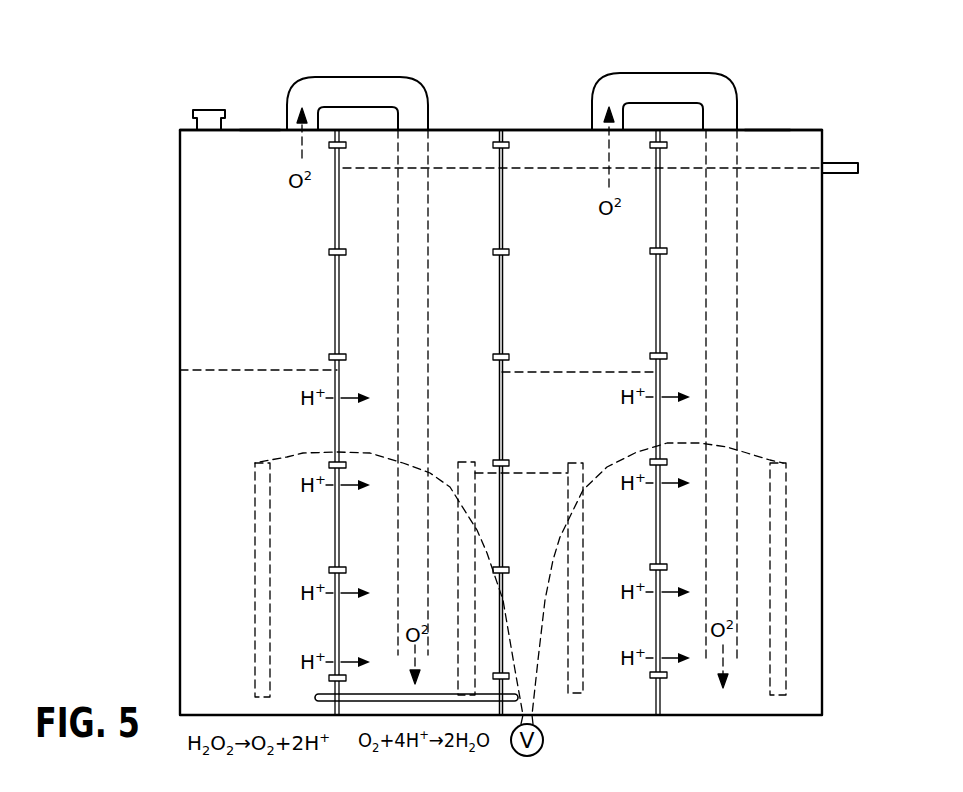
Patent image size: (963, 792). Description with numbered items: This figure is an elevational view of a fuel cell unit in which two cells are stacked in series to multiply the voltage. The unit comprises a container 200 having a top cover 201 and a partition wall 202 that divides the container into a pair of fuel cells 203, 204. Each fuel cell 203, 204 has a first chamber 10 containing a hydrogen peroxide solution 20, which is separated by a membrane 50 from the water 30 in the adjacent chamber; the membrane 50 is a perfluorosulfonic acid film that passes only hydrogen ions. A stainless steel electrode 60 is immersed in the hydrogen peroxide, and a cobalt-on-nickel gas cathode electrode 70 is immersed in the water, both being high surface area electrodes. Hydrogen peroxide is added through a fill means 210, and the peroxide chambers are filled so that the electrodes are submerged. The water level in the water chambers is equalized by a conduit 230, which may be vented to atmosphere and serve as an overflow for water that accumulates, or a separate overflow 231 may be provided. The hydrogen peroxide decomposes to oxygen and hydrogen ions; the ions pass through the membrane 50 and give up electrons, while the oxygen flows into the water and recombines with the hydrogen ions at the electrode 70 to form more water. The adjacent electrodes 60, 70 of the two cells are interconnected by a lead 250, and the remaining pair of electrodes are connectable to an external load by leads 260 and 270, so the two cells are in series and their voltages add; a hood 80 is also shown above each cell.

The first chamber 10 is at (278, 295).
The hydrogen peroxide solution 20 is at (232, 346).
The water 30 is at (579, 342).
The membrane 50 is at (337, 222).
The electrode 60 is at (371, 561).
The gas cathode electrode 70 is at (660, 548).
The gas collection hood 80 is at (385, 78).
The container 200 is at (823, 400).
The top cover 201 is at (804, 129).
The partition wall 202 is at (496, 162).
The fuel cell 203 is at (768, 118).
The fuel cell 204 is at (255, 112).
The fill means 210 is at (207, 108).
The conduit 230 is at (582, 122).
The overflow 231 is at (830, 163).
The lead 250 is at (521, 449).
The lead 260 is at (320, 573).
The lead 270 is at (657, 597).